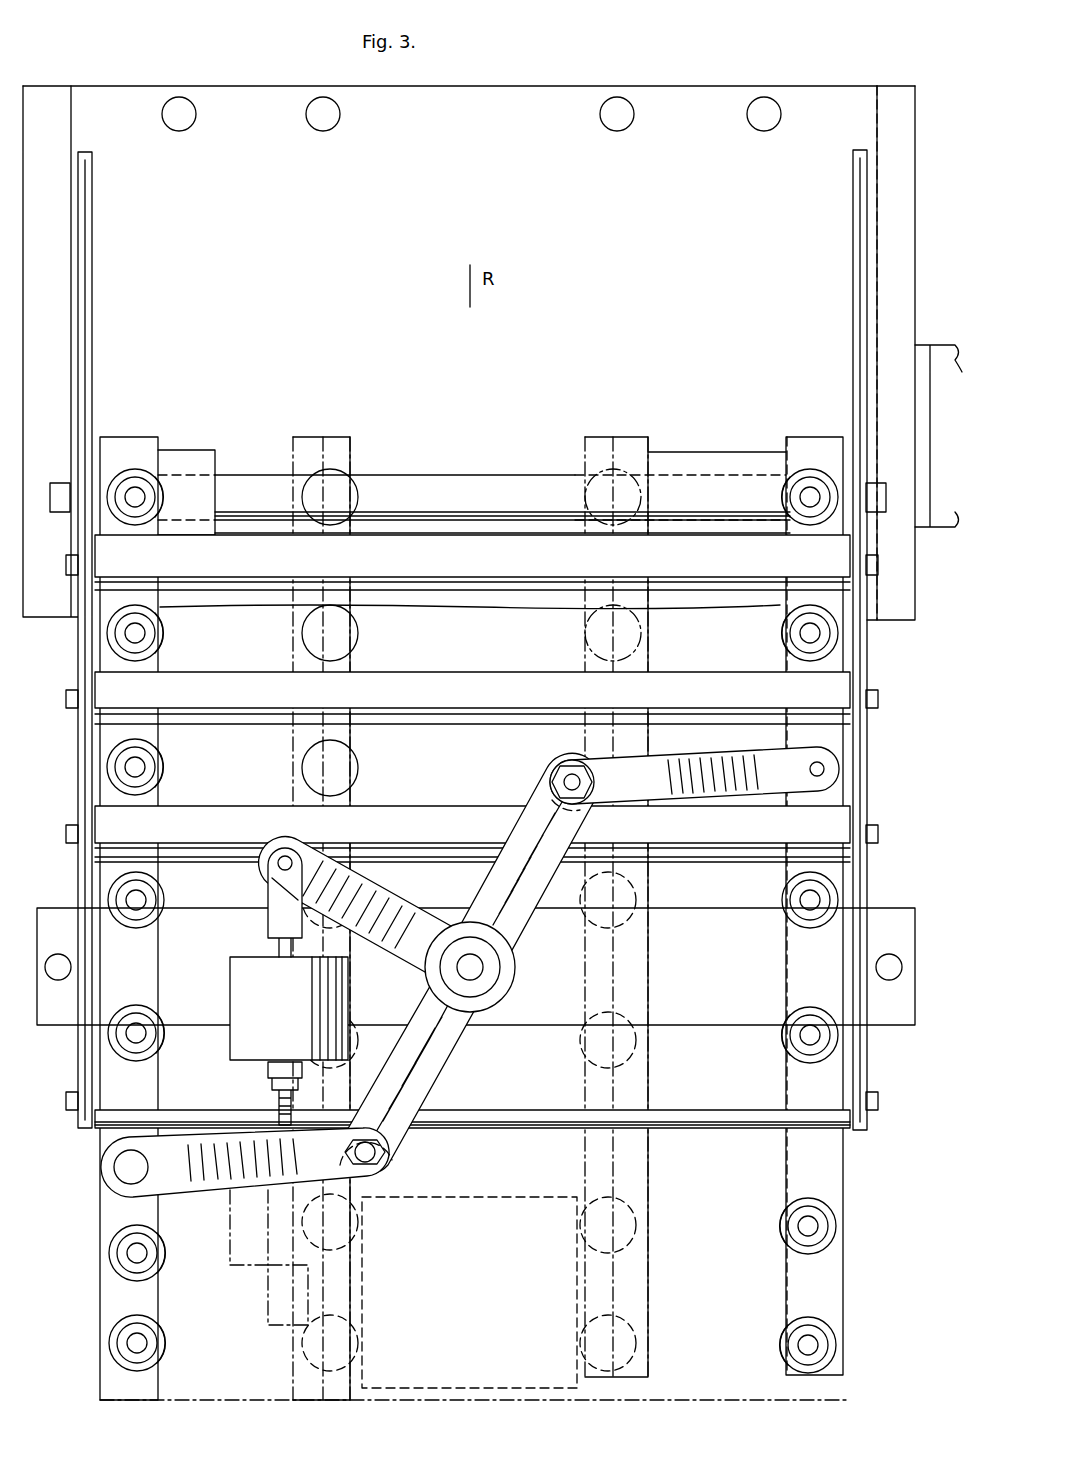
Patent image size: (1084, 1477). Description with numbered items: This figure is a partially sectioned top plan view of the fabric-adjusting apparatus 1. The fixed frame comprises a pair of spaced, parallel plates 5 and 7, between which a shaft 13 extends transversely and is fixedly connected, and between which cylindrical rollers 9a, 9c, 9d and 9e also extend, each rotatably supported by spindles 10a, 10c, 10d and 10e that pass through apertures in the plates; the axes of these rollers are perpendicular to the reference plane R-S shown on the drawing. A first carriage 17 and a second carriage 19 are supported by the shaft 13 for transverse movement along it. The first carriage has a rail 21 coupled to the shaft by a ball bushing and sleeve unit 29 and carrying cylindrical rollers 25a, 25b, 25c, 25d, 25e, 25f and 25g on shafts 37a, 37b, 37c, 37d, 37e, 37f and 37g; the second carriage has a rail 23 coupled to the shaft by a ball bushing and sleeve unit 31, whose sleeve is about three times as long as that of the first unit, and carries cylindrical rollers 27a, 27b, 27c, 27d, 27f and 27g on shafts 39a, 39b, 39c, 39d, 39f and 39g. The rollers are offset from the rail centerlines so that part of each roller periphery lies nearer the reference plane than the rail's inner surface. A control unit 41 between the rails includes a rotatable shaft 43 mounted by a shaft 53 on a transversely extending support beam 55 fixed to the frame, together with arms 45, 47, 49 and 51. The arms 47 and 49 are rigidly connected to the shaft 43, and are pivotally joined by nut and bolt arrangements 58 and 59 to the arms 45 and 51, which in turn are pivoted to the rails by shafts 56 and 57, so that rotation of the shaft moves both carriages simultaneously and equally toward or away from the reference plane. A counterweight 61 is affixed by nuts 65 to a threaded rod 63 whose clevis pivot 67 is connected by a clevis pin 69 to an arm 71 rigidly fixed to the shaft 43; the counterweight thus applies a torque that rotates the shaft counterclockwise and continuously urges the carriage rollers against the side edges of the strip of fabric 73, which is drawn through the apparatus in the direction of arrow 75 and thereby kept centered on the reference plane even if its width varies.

The apparatus 1 is at (279, 63).
The plate 5 is at (80, 656).
The plate 7 is at (860, 680).
The cylindrical roller 9a is at (507, 1122).
The cylindrical roller 9c is at (418, 815).
The cylindrical roller 9d is at (432, 690).
The cylindrical roller 9e is at (482, 578).
The spindle 10a is at (70, 1108).
The spindle 10c is at (68, 832).
The spindle 10d is at (68, 705).
The spindle 10e is at (66, 562).
The shaft 13 is at (444, 485).
The first carriage 17 is at (158, 386).
The second carriage 19 is at (826, 387).
The rail 21 is at (148, 440).
The rail 23 is at (605, 437).
The cylindrical roller 25a is at (102, 1338).
The cylindrical roller 25b is at (102, 1257).
The cylindrical roller 25c is at (94, 1042).
The cylindrical roller 25d is at (95, 889).
The cylindrical roller 25e is at (94, 767).
The cylindrical roller 25f is at (94, 644).
The cylindrical roller 25g is at (215, 464).
The cylindrical roller 27a is at (841, 1334).
The cylindrical roller 27b is at (841, 1217).
The cylindrical roller 27c is at (829, 1026).
The cylindrical roller 27d is at (819, 897).
The cylindrical roller 27f is at (813, 633).
The cylindrical roller 27g is at (680, 501).
The ball bushing and sleeve unit 29 is at (215, 455).
The ball bushing and sleeve unit 31 is at (720, 452).
The shaft 37a is at (130, 1340).
The shaft 37b is at (130, 1258).
The shaft 37c is at (128, 1033).
The shaft 37d is at (128, 900).
The shaft 37e is at (128, 770).
The shaft 37f is at (128, 640).
The shaft 37g is at (130, 497).
The shaft 39a is at (812, 1342).
The shaft 39b is at (812, 1224).
The shaft 39c is at (802, 1032).
The shaft 39d is at (805, 902).
The shaft 39f is at (816, 633).
The shaft 39g is at (812, 520).
The control unit 41 is at (430, 963).
The rotatable shaft 43 is at (430, 963).
The arm 45 is at (241, 1177).
The arm 47 is at (458, 1060).
The arm 49 is at (490, 884).
The arm 51 is at (709, 788).
The shaft 53 is at (430, 963).
The support beam 55 is at (905, 928).
The shaft 56 is at (125, 1167).
The shaft 57 is at (824, 771).
The nut and bolt arrangement 58 is at (380, 1160).
The nut and bolt arrangement 59 is at (566, 778).
The counterweight 61 is at (240, 978).
The rod 63 is at (278, 946).
The nuts 65 is at (268, 1085).
The clevis pivot 67 is at (259, 854).
The clevis pin 69 is at (285, 856).
The arm 71 is at (378, 917).
The strip of fabric 73 is at (400, 1362).
The arrow 75 is at (473, 1294).